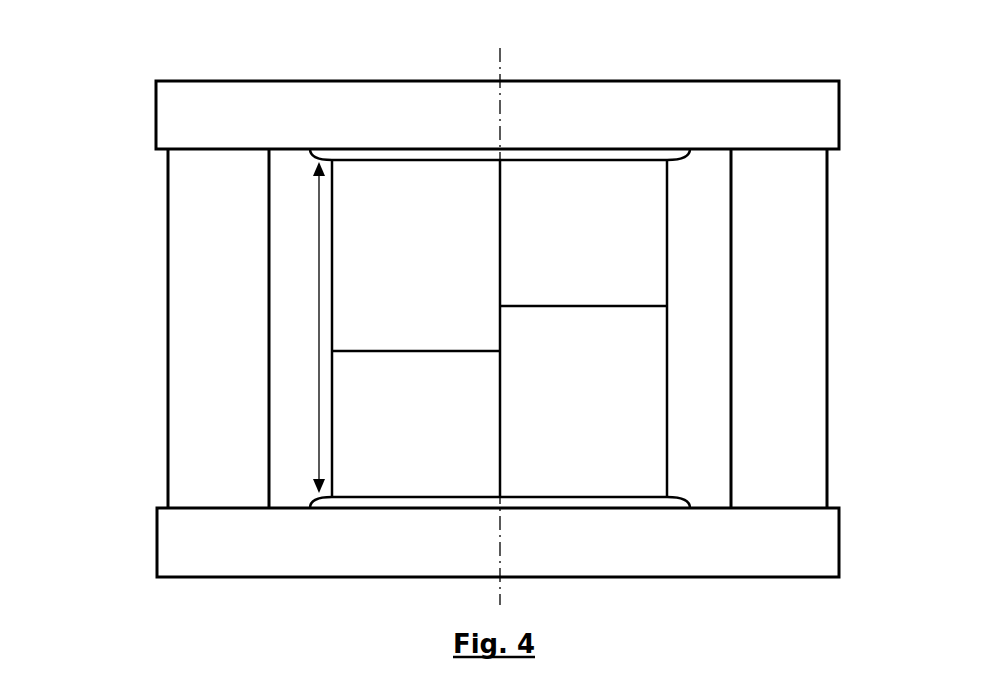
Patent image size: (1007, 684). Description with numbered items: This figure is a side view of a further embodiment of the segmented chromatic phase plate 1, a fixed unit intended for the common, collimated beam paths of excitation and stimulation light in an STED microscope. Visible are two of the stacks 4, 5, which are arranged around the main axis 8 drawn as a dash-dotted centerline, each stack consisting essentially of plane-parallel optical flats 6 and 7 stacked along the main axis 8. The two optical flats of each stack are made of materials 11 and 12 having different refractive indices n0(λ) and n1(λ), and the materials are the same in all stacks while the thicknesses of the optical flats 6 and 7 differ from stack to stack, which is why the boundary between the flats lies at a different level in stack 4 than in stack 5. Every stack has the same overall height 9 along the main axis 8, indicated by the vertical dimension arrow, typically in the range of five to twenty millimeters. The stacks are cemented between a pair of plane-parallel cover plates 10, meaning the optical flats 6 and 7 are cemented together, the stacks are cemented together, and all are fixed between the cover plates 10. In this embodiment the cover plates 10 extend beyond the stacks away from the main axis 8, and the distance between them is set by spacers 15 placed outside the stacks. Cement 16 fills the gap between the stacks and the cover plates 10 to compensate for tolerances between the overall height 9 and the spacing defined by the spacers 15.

The segmented chromatic phase plate 1 is at (871, 84).
The stack 4 is at (668, 418).
The stack 5 is at (331, 439).
The optical flat 6 is at (363, 478).
The optical flat 7 is at (368, 187).
The main axis 8 is at (505, 586).
The overall height 9 is at (318, 328).
The cover plate 10 is at (669, 112).
The material 11 is at (353, 388).
The material 12 is at (350, 233).
The spacer 15 is at (190, 284).
The cement 16 is at (433, 155).